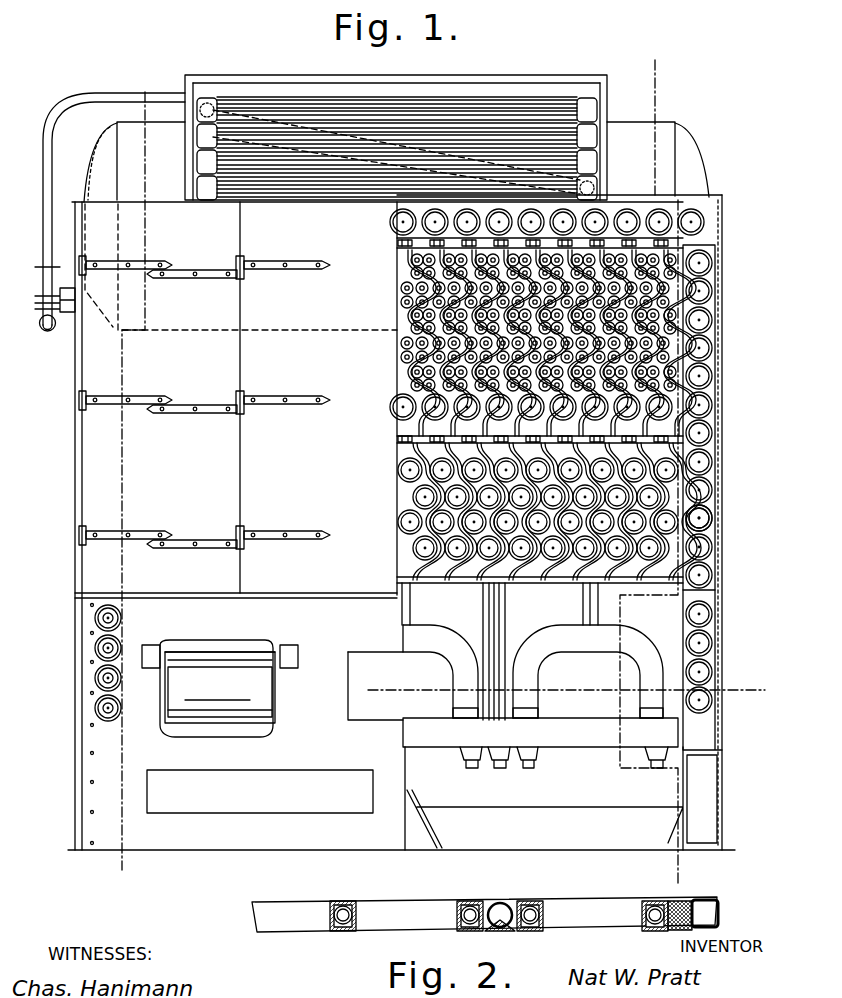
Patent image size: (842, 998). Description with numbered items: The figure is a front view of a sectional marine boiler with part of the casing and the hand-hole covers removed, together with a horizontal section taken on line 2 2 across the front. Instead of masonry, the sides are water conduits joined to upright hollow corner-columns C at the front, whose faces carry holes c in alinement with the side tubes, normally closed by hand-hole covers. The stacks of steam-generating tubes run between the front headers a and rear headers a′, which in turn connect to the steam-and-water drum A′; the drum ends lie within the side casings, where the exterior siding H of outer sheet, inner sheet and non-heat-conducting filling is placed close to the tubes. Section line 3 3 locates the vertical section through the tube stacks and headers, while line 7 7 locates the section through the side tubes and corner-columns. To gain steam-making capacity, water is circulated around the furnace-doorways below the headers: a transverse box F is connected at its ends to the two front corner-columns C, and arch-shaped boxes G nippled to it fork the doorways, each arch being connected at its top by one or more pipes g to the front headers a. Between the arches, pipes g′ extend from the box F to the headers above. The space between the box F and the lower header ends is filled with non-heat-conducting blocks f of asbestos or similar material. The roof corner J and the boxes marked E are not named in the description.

In FIG. 1, the section line 7 7 is at (163, 115).
In FIG. 1, the section line 3 3 is at (676, 90).
In FIG. 2, the section line 3 3 is at (683, 883).
In FIG. 1, the section line 2 2 is at (565, 690).
In FIG. 1, the front header a is at (410, 308).
In FIG. 1, the rear header a′ is at (577, 582).
In FIG. 1, the front corner-column C is at (699, 265).
In FIG. 2, the front corner-column C is at (720, 914).
In FIG. 1, the hole c is at (701, 521).
In FIG. 1, the exterior siding H is at (76, 394).
In FIG. 1, the roof corner J is at (396, 162).
In FIG. 1, the steam-and-water drum A′ is at (396, 161).
In FIG. 1, the pipe g is at (510, 604).
In FIG. 1, the pipe g′ is at (506, 605).
In FIG. 2, the pipe g′ is at (505, 903).
In FIG. 1, the arch-shaped box G is at (505, 671).
In FIG. 2, the arch-shaped box G is at (351, 902).
In FIG. 1, the boxes E is at (369, 681).
In FIG. 1, the transverse box F is at (540, 743).
In FIG. 2, the transverse box F is at (385, 928).
In FIG. 2, the non-heat-conducting block f is at (512, 930).